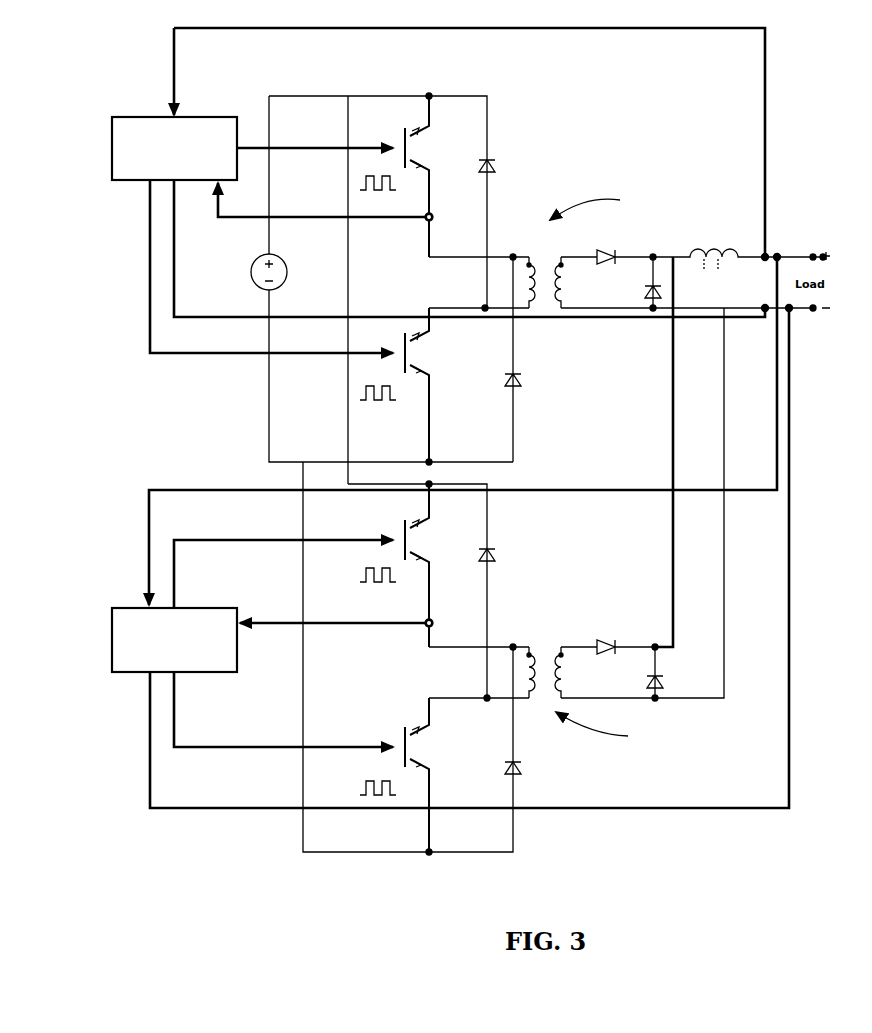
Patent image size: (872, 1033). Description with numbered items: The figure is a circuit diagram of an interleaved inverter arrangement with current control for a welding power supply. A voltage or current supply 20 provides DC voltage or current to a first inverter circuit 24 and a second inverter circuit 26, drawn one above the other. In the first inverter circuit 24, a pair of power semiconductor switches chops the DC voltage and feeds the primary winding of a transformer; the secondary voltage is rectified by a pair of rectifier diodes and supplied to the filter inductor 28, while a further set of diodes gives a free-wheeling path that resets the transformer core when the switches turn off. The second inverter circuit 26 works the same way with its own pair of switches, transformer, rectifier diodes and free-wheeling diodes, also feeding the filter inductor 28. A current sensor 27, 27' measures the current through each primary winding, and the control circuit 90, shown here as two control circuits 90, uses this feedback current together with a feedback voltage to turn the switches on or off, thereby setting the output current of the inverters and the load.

The voltage or current supply 20 is at (252, 266).
The first inverter circuit 24 is at (458, 68).
The second inverter circuit 26 is at (446, 881).
The current sensor 27 is at (446, 202).
The current sensor 27' is at (445, 607).
The filter inductor 28 is at (714, 220).
The control circuit 90 is at (112, 150).